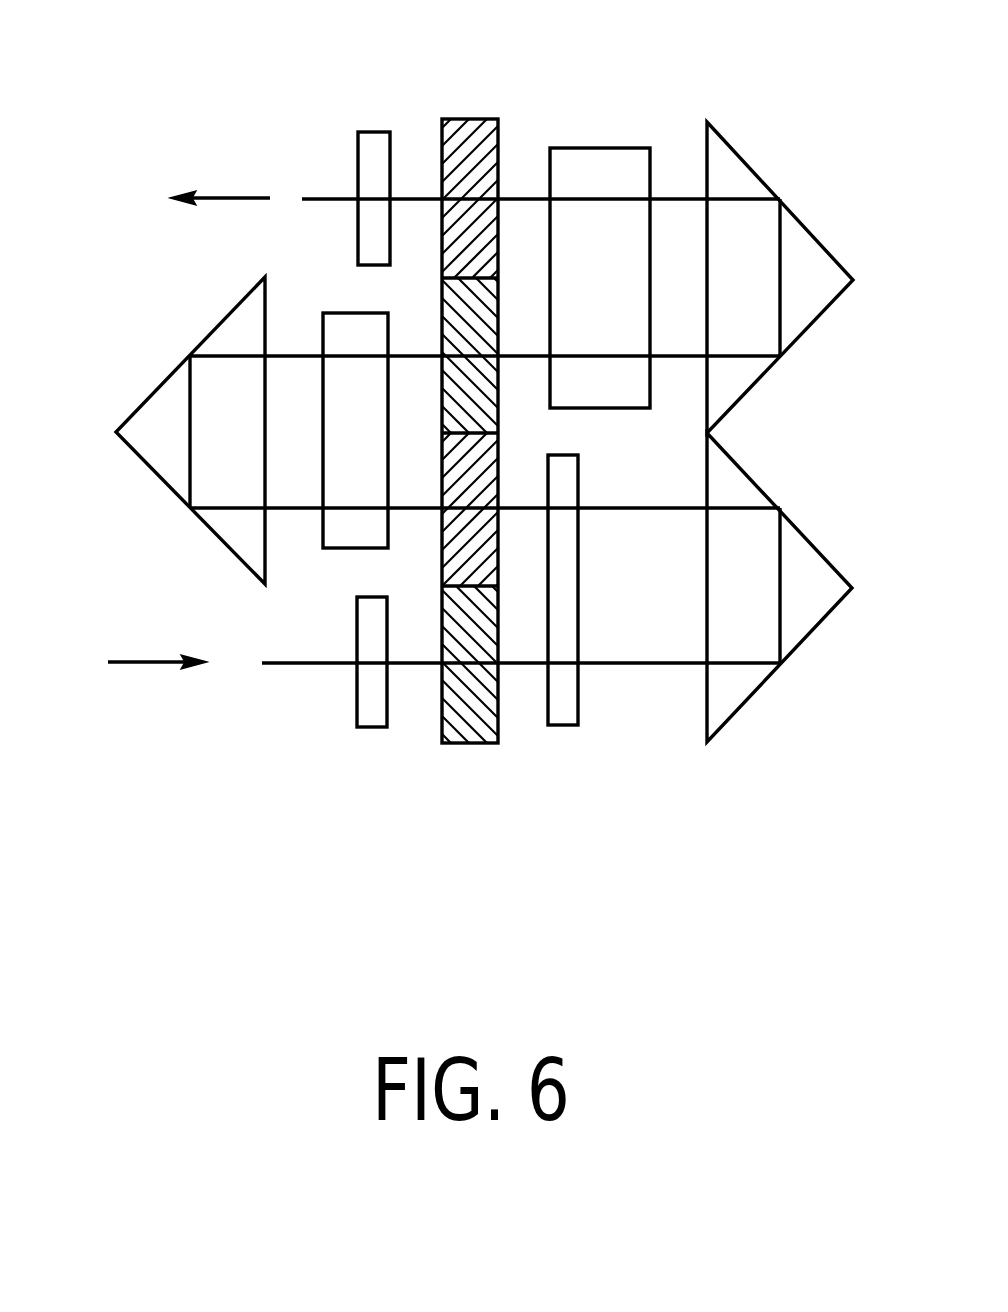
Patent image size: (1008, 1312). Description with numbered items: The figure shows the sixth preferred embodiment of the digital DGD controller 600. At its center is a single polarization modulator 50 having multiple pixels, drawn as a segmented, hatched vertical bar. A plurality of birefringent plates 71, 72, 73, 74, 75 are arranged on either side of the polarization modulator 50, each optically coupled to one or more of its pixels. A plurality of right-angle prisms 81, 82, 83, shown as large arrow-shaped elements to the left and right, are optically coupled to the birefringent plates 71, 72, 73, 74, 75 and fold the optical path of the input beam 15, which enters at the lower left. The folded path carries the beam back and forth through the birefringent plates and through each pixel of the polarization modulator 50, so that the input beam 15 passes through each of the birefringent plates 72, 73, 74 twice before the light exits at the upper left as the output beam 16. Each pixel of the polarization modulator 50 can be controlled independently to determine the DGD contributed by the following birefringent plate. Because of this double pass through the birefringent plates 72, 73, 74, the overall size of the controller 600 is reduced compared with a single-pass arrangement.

The digital DGD controller 600 is at (484, 501).
The input beam 15 is at (145, 662).
The output light beam 16 is at (223, 197).
The polarization modulator 50 is at (478, 118).
The birefringent plate 71 is at (372, 727).
The birefringent plate 72 is at (563, 727).
The birefringent plate 73 is at (345, 549).
The birefringent plate 74 is at (598, 148).
The birefringent plate 75 is at (373, 132).
The right-angle prism 81 is at (826, 556).
The right-angle prism 82 is at (137, 405).
The right-angle prism 83 is at (826, 246).